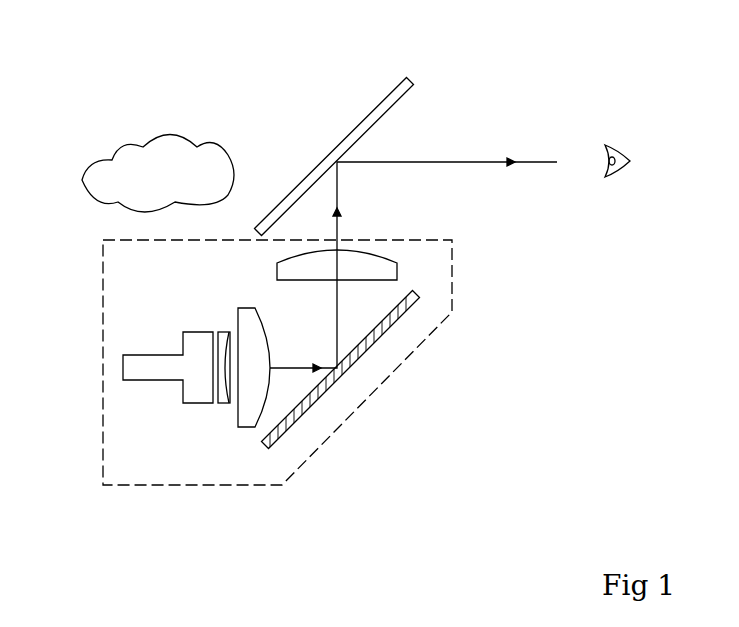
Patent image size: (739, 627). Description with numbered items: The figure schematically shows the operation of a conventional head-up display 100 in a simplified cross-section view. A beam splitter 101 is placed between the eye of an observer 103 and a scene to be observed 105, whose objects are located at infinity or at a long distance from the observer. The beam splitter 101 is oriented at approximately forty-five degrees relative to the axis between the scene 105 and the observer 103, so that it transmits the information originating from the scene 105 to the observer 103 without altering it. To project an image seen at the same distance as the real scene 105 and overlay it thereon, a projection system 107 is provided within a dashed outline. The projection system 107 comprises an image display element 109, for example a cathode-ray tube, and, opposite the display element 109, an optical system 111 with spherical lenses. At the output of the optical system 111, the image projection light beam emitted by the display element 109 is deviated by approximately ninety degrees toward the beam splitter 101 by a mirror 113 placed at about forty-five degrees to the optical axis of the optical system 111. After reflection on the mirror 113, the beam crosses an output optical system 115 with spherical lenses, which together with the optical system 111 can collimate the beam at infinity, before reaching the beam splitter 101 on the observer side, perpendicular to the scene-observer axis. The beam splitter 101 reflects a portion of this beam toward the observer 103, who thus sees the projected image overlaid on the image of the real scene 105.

The head-up display 100 is at (508, 80).
The beam splitter 101 is at (375, 108).
The observer 103 is at (622, 154).
The scene to be observed 105 is at (128, 143).
The projection system 107 is at (103, 447).
The image display element 109 is at (140, 355).
The optical system 111 is at (218, 412).
The mirror 113 is at (418, 292).
The output optical system 115 is at (277, 268).